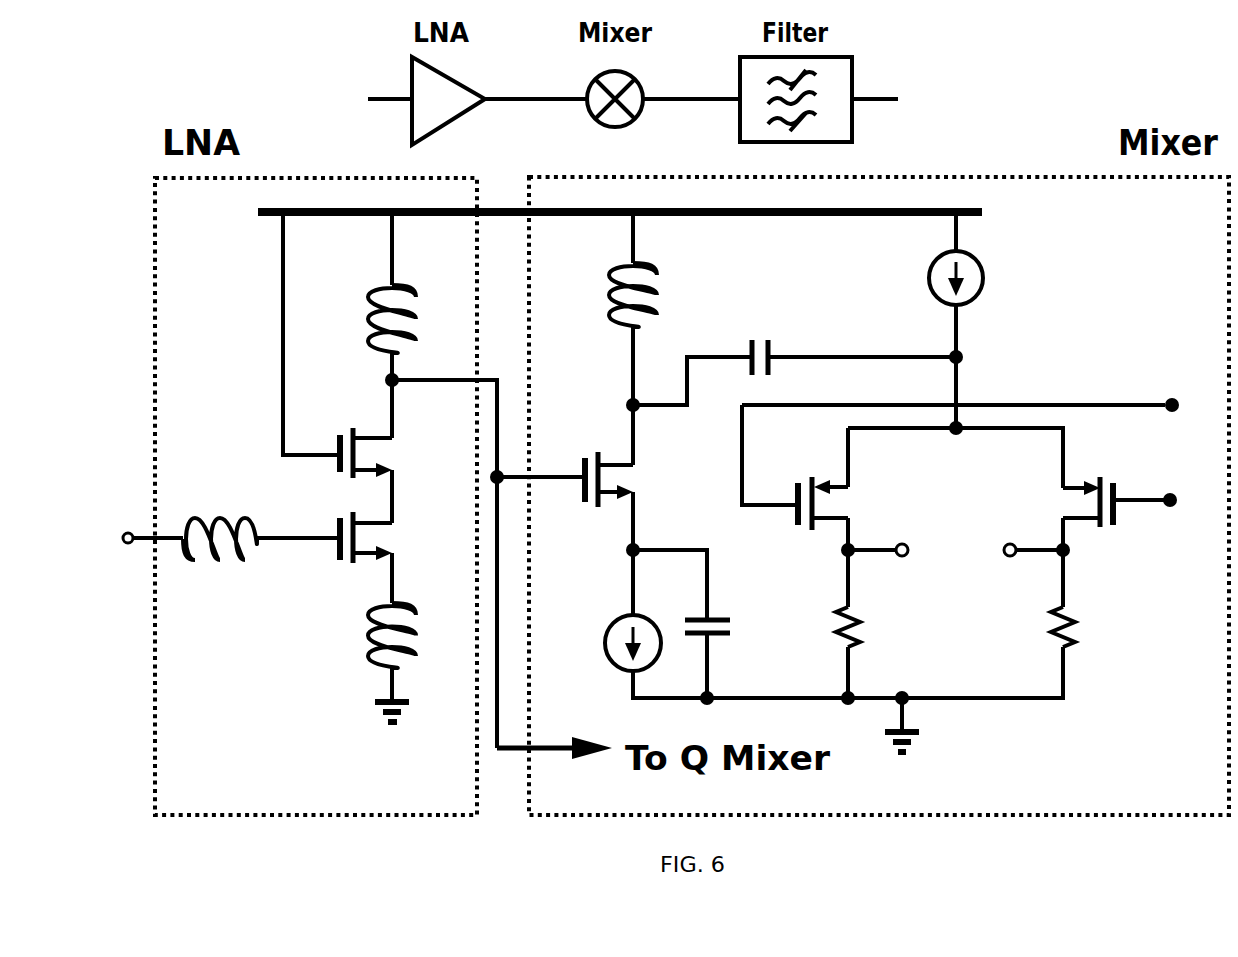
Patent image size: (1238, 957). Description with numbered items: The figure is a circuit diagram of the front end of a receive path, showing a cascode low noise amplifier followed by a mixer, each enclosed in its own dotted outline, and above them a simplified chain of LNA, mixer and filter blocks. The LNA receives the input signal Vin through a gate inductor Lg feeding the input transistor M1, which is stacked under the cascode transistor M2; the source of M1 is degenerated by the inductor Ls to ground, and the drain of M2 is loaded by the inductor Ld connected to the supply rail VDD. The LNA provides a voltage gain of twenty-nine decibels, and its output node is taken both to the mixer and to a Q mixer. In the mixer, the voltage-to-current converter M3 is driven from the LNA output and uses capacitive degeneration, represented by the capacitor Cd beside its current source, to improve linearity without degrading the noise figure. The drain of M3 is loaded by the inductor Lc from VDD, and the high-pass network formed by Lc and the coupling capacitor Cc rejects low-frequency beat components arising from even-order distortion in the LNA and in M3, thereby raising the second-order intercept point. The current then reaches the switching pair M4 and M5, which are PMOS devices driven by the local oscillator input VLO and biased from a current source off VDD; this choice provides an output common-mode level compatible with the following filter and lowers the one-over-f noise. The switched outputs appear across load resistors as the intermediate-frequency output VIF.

The supply voltage bus VDD is at (663, 214).
The LNA drain inductor Ld is at (417, 320).
The LNA gate inductor Lg is at (220, 513).
The LNA source degeneration inductor Ls is at (366, 637).
The LNA input transistor M1 is at (355, 543).
The LNA cascode transistor M2 is at (396, 457).
The RF input Vin is at (126, 543).
The high-pass network inductor Lc is at (607, 297).
The high-pass network capacitor Cc is at (794, 349).
The decoupling capacitor Cd is at (732, 632).
The voltage-to-current converter M3 is at (641, 480).
The mixer switching transistor M4 is at (855, 562).
The mixer switching transistor M5 is at (1082, 562).
The IF output VIF is at (955, 561).
The LO input VLO is at (1176, 472).